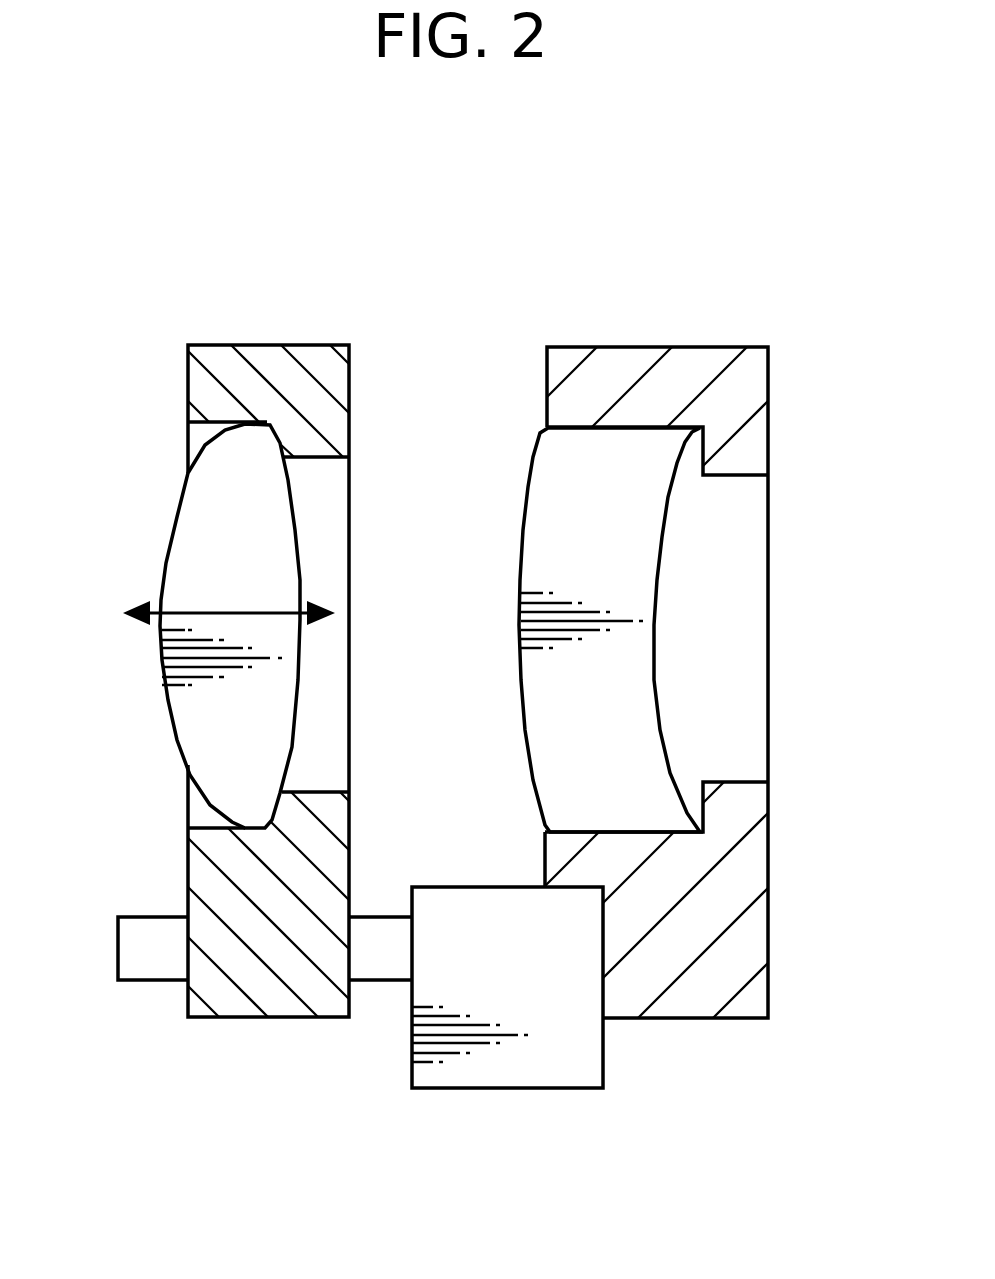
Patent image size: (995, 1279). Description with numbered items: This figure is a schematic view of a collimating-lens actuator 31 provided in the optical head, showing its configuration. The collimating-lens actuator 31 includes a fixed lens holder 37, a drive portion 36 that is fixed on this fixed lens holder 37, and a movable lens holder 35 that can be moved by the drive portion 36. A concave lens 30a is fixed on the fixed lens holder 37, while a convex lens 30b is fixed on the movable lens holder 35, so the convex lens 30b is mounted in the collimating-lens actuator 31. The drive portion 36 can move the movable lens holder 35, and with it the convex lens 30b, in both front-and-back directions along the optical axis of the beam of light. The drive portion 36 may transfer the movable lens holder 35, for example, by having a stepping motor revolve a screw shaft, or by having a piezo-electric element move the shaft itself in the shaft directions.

The collimating-lens actuator 31 is at (771, 302).
The concave lens 30a is at (533, 467).
The convex lens 30b is at (175, 517).
The movable lens holder 35 is at (218, 1017).
The drive portion 36 is at (445, 1088).
The fixed lens holder 37 is at (703, 1018).